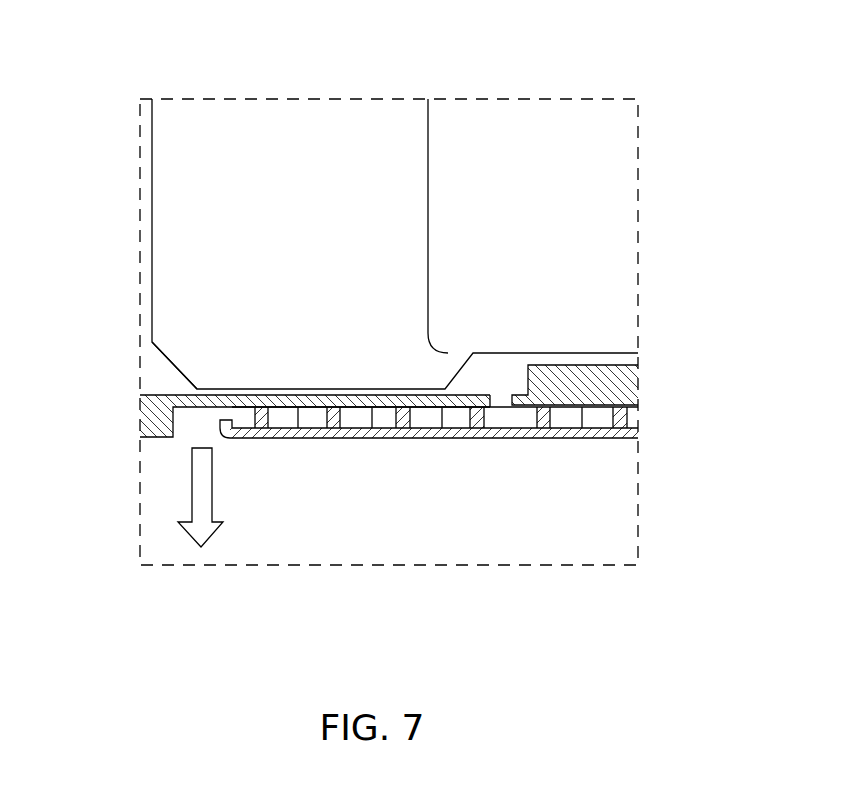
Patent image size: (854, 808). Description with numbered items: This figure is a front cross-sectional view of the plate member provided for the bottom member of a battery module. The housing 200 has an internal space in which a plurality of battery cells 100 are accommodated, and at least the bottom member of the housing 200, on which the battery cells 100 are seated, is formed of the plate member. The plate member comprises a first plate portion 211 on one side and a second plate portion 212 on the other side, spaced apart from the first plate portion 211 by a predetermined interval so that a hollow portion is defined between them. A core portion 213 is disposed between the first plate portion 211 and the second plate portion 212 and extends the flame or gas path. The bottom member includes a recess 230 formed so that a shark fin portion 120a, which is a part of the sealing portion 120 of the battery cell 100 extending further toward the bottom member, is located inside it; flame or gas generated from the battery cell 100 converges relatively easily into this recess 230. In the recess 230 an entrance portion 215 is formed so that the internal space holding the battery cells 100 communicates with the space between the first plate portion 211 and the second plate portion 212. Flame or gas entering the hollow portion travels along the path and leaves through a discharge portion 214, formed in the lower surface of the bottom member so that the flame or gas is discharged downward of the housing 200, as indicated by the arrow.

The battery cell 100 is at (588, 163).
The sealing portion 120 is at (277, 117).
The shark fin portion 120a is at (207, 350).
The housing 200 is at (389, 525).
The first plate portion 211 is at (420, 433).
The second plate portion 212 is at (353, 398).
The core portion 213 is at (475, 413).
The discharge portion 214 is at (186, 424).
The entrance portion 215 is at (500, 399).
The recess 230 is at (489, 380).